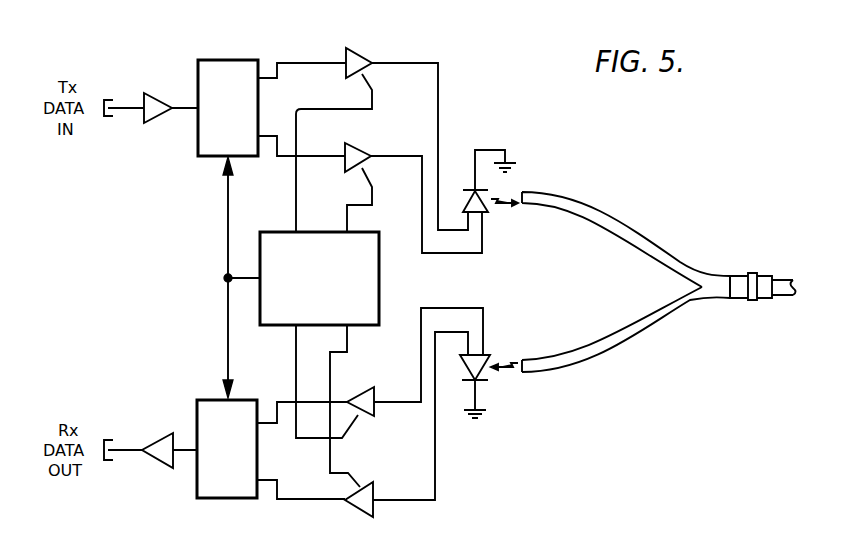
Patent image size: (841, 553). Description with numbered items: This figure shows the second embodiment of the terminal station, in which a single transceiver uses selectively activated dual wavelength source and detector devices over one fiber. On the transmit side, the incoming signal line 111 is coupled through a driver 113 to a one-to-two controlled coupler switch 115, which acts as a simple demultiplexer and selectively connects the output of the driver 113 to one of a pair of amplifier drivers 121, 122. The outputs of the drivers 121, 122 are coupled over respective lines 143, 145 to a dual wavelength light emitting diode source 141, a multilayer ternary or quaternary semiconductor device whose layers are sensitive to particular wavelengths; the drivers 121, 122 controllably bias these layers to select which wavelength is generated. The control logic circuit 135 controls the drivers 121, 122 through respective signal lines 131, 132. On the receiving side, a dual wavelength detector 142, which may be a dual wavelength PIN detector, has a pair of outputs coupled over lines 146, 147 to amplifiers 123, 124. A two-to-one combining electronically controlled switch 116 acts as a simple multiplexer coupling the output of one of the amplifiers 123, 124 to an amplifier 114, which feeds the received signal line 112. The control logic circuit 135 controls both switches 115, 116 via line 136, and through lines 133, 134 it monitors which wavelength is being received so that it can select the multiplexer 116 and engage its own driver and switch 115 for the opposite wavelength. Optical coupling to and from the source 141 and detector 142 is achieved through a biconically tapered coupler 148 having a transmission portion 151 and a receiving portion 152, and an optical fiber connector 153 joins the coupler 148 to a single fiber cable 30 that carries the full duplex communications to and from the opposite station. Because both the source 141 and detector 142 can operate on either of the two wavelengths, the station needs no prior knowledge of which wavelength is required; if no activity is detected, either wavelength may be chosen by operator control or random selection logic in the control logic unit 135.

The single fiber cable 30 is at (783, 298).
The incoming signal line 111 is at (129, 107).
The received signal line 112 is at (123, 452).
The driver 113 is at (160, 92).
The amplifier 114 is at (155, 469).
The 1:2 controlled coupler switch 115 is at (243, 60).
The 2:1 combining electronically controlled switch 116 is at (225, 499).
The amplifier driver 121 is at (362, 50).
The amplifier driver 122 is at (362, 148).
The amplifier 123 is at (356, 417).
The amplifier 124 is at (360, 515).
The signal line 131 is at (300, 111).
The signal line 132 is at (372, 202).
The line 133 is at (295, 347).
The line 134 is at (347, 350).
The control logic circuit 135 is at (380, 291).
The line 136 is at (226, 318).
The dual wavelength light emitting diode source 141 is at (488, 214).
The dual wavelength detector 142 is at (491, 356).
The line 143 is at (438, 83).
The line 145 is at (447, 255).
The line 146 is at (392, 401).
The line 147 is at (415, 500).
The biconically tapered coupler 148 is at (719, 301).
The transmission portion 151 is at (647, 238).
The receiving portion 152 is at (628, 352).
The optical fiber connector 153 is at (764, 276).